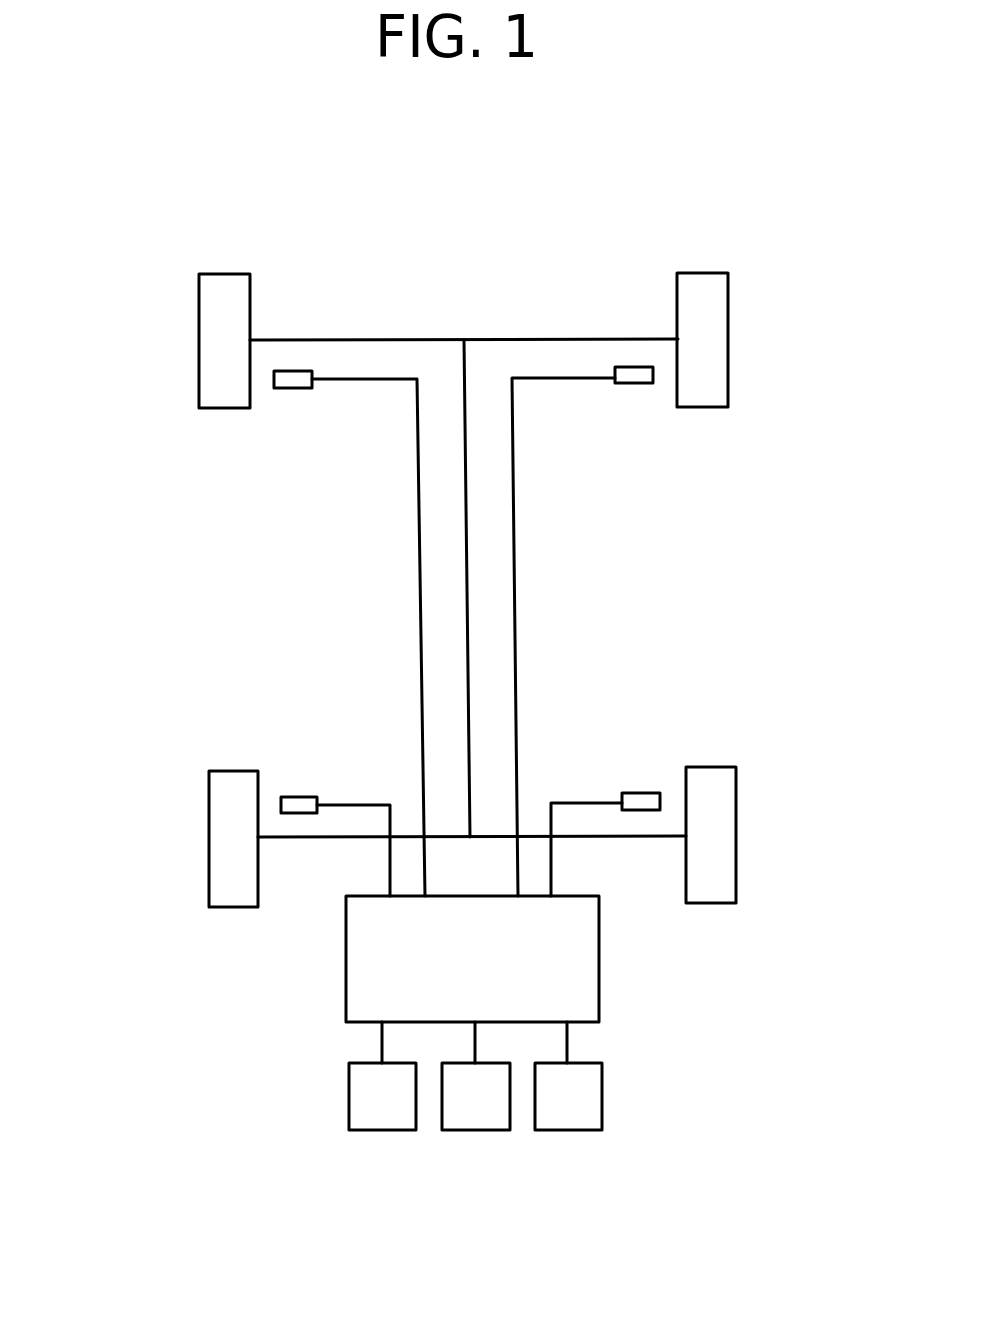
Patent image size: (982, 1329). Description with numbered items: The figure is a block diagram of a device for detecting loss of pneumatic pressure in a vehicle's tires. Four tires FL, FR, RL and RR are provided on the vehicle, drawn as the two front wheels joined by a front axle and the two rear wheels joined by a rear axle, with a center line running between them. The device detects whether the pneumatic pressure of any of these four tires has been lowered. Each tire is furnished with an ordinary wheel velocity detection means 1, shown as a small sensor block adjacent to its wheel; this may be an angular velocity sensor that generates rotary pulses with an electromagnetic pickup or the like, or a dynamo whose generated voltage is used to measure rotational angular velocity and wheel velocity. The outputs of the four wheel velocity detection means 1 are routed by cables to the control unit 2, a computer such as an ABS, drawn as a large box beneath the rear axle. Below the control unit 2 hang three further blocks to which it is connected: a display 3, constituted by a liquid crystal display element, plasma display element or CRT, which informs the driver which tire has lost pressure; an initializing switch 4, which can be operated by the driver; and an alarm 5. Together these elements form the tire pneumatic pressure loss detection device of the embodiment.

The front left tire FL is at (212, 313).
The front right tire FR is at (713, 313).
The rear left tire RL is at (222, 822).
The rear right tire RR is at (722, 821).
The wheel velocity detection means 1 is at (284, 382).
The control unit 2 is at (592, 988).
The display 3 is at (386, 1118).
The initializing switch 4 is at (480, 1117).
The alarm 5 is at (572, 1118).